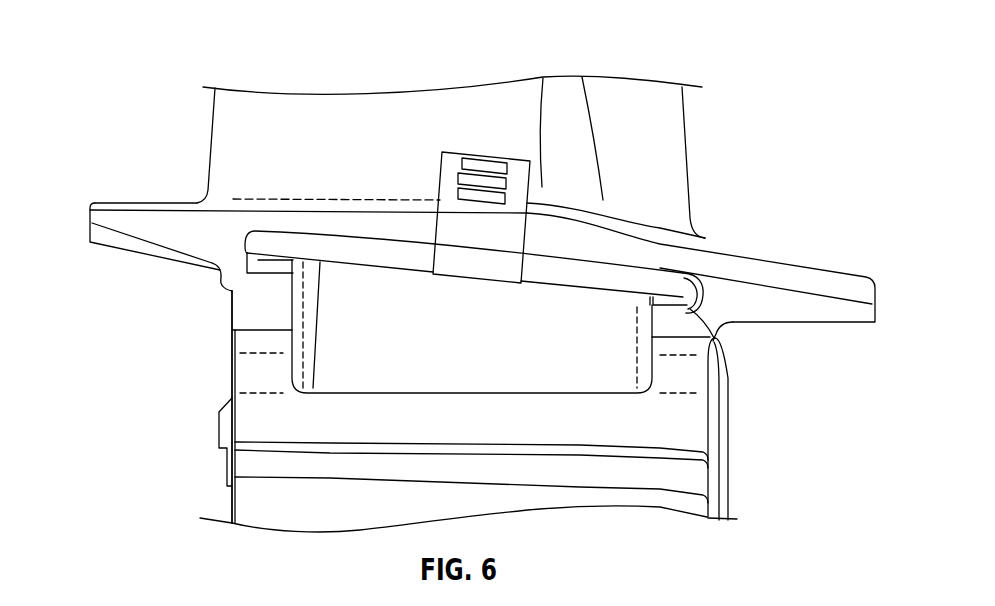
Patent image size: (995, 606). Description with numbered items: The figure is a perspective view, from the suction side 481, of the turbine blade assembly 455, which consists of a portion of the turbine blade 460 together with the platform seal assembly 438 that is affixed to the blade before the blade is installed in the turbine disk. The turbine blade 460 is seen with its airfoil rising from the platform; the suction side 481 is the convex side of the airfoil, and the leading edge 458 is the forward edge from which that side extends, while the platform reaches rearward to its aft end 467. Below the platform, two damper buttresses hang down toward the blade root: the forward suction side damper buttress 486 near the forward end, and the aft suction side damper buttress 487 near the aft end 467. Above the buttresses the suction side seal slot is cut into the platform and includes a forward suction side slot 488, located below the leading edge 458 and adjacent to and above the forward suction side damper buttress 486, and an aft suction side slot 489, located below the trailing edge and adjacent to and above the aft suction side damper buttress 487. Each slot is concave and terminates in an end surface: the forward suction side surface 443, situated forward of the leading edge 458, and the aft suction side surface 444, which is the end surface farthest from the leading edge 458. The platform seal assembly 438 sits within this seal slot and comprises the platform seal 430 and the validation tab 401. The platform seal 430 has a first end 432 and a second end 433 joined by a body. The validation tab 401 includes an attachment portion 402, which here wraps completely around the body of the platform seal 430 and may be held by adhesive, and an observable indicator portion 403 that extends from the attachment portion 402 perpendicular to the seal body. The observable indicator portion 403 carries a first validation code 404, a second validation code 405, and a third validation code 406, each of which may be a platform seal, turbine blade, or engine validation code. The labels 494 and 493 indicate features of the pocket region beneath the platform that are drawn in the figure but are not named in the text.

The turbine blade assembly 455 is at (221, 33).
The turbine blade 460 is at (180, 79).
The suction side 481 is at (660, 145).
The leading edge 458 is at (690, 180).
The second end 433 is at (247, 231).
The aft end 467 is at (90, 218).
The aft suction side slot 489 is at (270, 271).
The platform seal 430 is at (547, 268).
The first end 432 is at (683, 272).
The validation tab 401 is at (417, 132).
The attachment portion 402 is at (483, 272).
The observable indicator portion 403 is at (504, 158).
The first validation code 404 is at (505, 158).
The second validation code 405 is at (458, 181).
The third validation code 406 is at (457, 194).
The platform seal assembly 438 is at (512, 302).
The aft suction side surface 444 is at (258, 263).
The forward suction side surface 443 is at (688, 301).
The aft suction side damper buttress 487 is at (232, 338).
The pocket left wall 494 is at (305, 318).
The pocket right wall 493 is at (640, 339).
The forward suction side slot 488 is at (717, 338).
The forward suction side damper buttress 486 is at (670, 328).